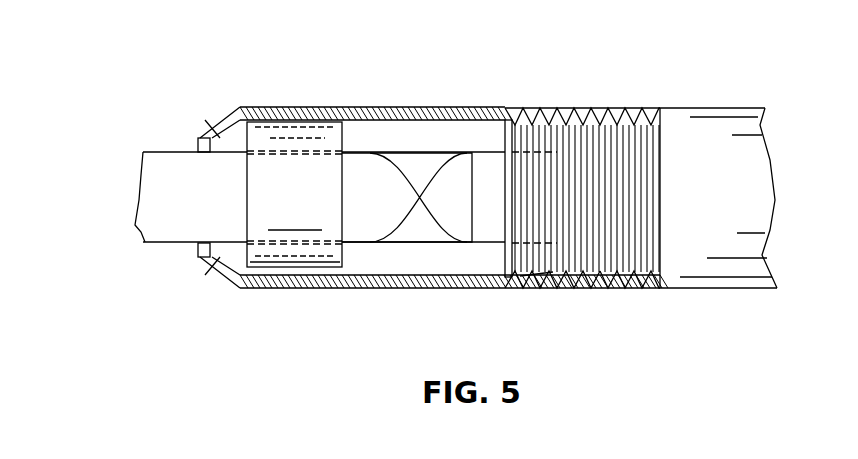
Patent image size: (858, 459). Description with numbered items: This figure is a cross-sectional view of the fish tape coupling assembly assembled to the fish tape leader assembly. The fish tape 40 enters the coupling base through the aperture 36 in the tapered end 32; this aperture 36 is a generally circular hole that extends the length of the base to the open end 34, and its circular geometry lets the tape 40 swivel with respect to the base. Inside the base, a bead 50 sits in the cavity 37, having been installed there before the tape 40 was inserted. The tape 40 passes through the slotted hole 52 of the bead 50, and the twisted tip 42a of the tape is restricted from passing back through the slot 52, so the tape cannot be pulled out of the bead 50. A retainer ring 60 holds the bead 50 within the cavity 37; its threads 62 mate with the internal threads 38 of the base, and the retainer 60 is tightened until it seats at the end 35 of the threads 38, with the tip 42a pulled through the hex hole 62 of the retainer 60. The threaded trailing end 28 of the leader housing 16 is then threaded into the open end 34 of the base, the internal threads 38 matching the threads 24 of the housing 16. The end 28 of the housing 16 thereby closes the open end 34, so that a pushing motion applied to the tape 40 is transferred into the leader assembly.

The leader housing 16 is at (730, 110).
The threads 24 is at (637, 275).
The threaded trailing end 28 is at (645, 122).
The tapered end 32 is at (207, 136).
The open end 34 is at (518, 272).
The end of threads 35 is at (507, 120).
The aperture 36 is at (198, 257).
The cavity 37 is at (377, 137).
The internal threads 38 is at (550, 122).
The tape 40 is at (148, 245).
The tip 42a is at (440, 230).
The bead 50 is at (297, 133).
The slotted hole 52 is at (307, 250).
The retainer ring 60 is at (525, 142).
The threads 62 is at (553, 272).